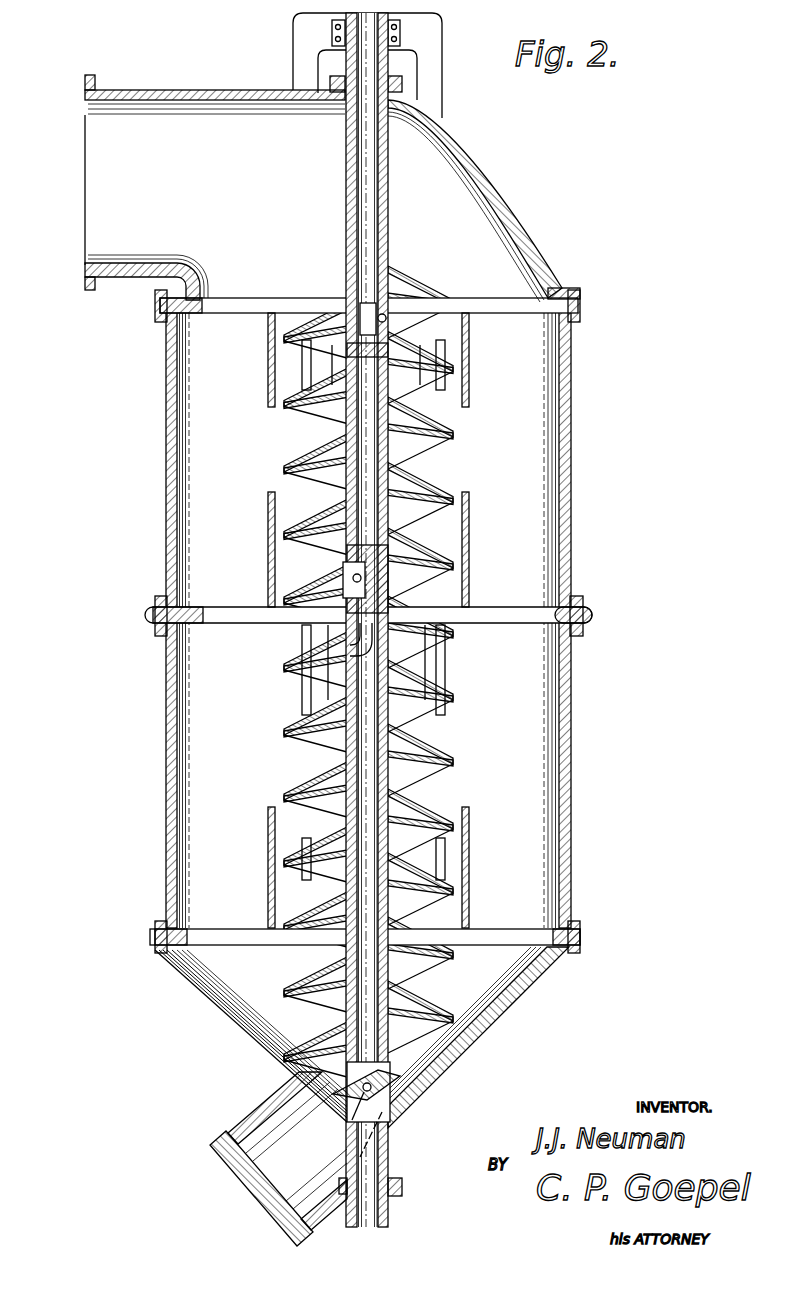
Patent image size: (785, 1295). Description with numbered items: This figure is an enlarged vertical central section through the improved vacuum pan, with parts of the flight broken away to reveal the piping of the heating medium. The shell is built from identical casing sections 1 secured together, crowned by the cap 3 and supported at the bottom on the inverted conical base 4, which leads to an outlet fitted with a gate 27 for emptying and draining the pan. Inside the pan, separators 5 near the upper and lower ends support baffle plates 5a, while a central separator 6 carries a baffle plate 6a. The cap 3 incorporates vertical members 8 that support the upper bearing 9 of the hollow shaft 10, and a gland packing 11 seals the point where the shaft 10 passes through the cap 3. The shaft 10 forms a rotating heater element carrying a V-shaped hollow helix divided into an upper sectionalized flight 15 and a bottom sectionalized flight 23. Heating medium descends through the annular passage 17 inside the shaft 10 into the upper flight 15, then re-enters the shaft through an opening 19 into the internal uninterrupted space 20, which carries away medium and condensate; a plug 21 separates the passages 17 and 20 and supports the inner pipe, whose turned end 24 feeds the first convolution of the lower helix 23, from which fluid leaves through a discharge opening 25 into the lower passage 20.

The sections 1 is at (166, 536).
The cap 3 is at (494, 190).
The base 4 is at (490, 1035).
The separators 5 is at (240, 314).
The baffle plates 5a is at (250, 838).
The separator 6 is at (240, 595).
The baffle plate 6a is at (268, 560).
The vertical members 8 is at (435, 64).
The upper bearing 9 is at (400, 36).
The shaft 10 is at (345, 176).
The gland packing 11 is at (332, 84).
The upper sectionalized flight 15 is at (452, 446).
The annular passage 17 is at (95, 200).
The opening 19 is at (352, 578).
The internal uninterrupted space 20 is at (374, 745).
The plug 21 is at (388, 353).
The bottom sectionalized flight 23 is at (442, 690).
The turned lower end of inner pipe 24 is at (350, 654).
The discharge opening 25 is at (342, 1120).
The gate 27 is at (262, 1183).